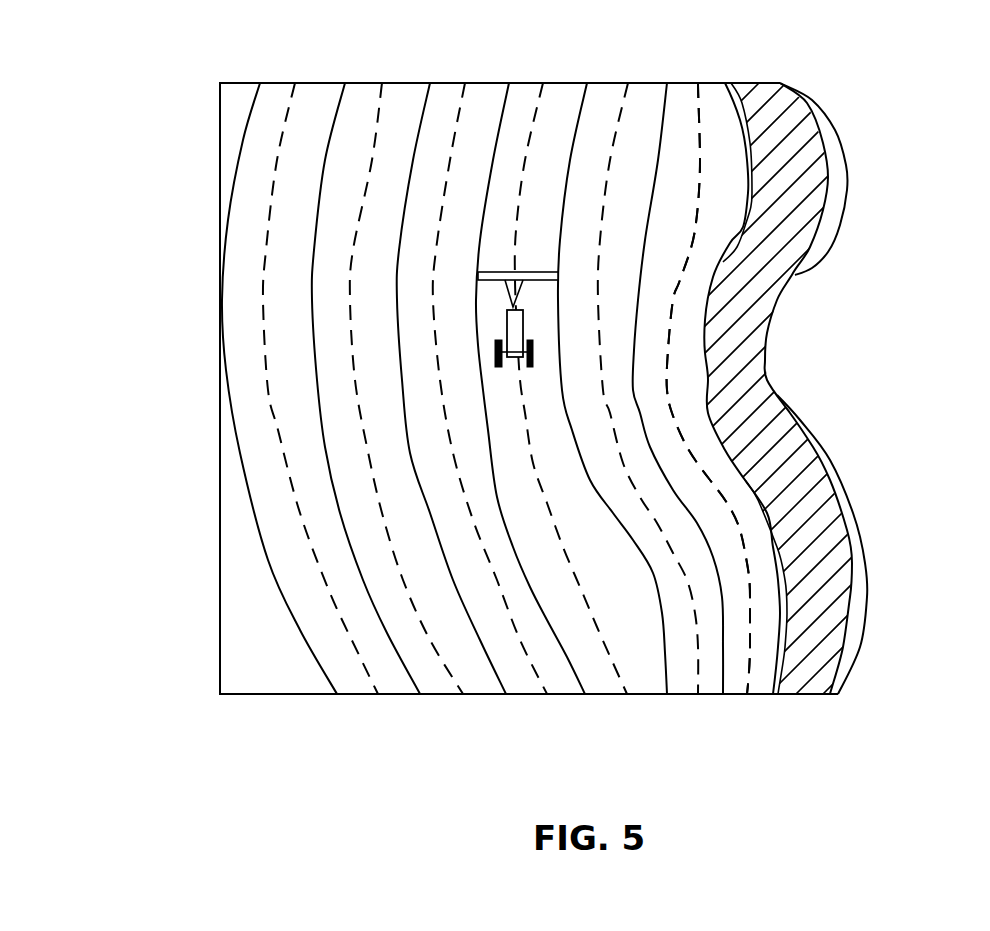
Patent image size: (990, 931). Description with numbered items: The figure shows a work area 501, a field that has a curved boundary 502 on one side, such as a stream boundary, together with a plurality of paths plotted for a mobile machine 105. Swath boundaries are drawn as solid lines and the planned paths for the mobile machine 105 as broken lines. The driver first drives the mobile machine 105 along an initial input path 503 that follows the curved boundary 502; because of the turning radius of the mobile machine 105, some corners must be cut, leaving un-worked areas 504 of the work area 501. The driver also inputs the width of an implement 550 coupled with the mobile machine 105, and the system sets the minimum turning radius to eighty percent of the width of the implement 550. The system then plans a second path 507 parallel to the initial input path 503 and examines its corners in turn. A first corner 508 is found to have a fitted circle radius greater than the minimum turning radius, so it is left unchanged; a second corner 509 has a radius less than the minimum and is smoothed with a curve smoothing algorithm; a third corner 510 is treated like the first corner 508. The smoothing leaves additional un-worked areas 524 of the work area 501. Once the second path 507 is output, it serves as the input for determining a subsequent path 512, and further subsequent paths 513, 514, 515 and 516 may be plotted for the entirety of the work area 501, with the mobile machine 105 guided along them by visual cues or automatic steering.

The work area 501 is at (196, 422).
The curved boundary 502 is at (824, 106).
The initial input path 503 is at (816, 698).
The un-worked areas 504 is at (823, 266).
The second path 507 is at (750, 698).
The first corner 508 is at (706, 187).
The second corner 509 is at (646, 353).
The third corner 510 is at (753, 585).
The subsequent path 512 is at (705, 698).
The subsequent path 513 is at (630, 698).
The subsequent path 514 is at (550, 698).
The subsequent path 515 is at (467, 698).
The subsequent path 516 is at (381, 698).
The un-worked areas 524 is at (741, 102).
The implement 550 is at (537, 271).
The mobile machine 105 is at (512, 357).